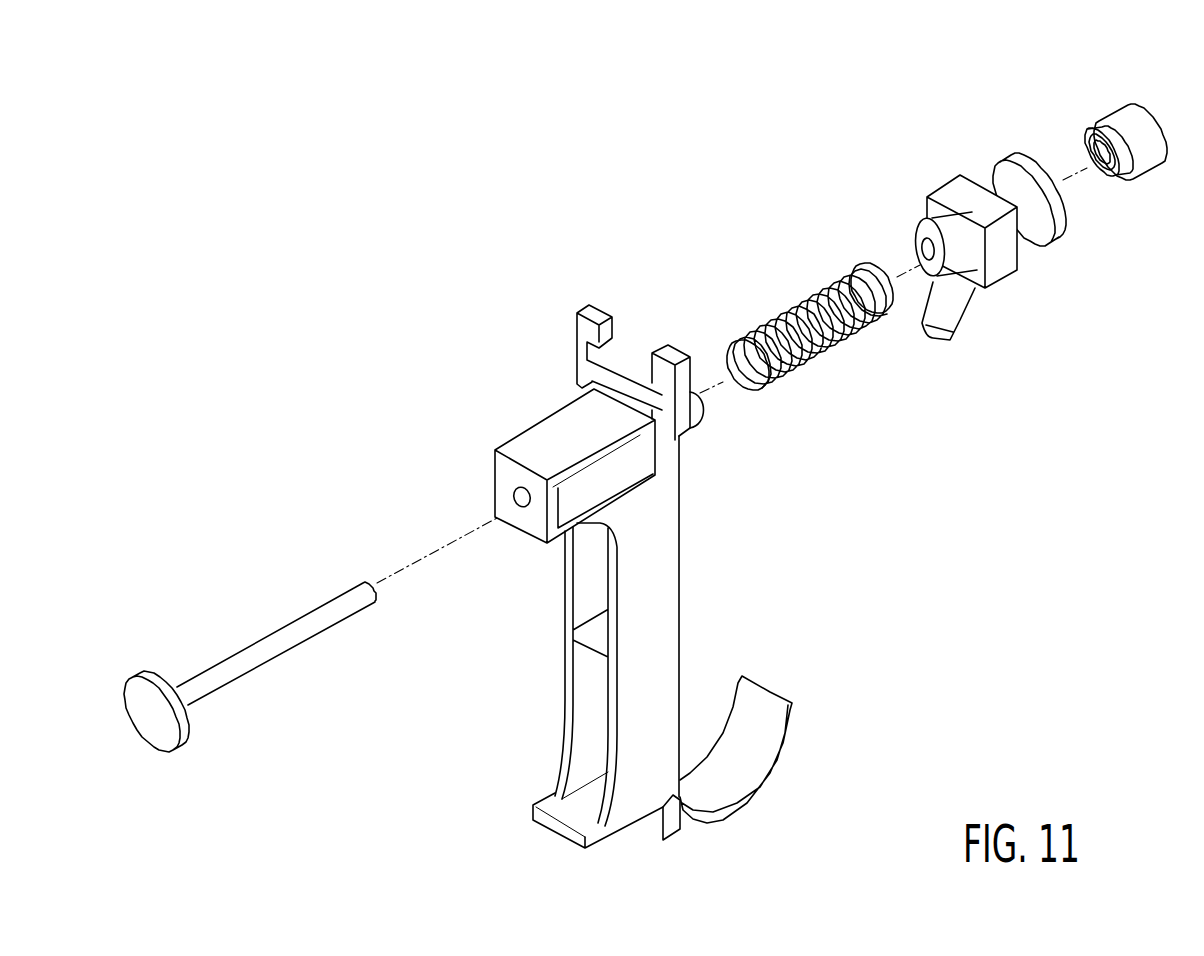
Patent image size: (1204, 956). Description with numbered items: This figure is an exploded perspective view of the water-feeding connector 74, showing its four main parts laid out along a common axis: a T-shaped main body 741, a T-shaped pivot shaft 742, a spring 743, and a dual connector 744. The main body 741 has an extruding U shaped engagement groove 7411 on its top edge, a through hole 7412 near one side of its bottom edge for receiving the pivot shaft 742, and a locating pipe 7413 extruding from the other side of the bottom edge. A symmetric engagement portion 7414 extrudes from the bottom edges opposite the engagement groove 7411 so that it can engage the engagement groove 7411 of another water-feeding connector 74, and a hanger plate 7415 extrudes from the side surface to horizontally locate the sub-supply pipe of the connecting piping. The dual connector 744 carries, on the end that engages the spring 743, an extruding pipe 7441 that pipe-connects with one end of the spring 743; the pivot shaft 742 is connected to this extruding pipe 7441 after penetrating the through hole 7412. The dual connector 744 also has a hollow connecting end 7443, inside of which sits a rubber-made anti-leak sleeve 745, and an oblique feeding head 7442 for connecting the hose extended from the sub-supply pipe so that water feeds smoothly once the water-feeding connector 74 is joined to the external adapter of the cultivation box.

The water-feeding connector 74 is at (331, 229).
The T-shaped main body 741 is at (568, 627).
The U shaped engagement groove 7411 is at (592, 358).
The through hole 7412 is at (515, 495).
The locating pipe 7413 is at (697, 415).
The symmetric engagement portion 7414 is at (678, 828).
The hanger plate 7415 is at (770, 697).
The T-shaped pivot shaft 742 is at (253, 635).
The spring 743 is at (800, 290).
The dual connector 744 is at (960, 160).
The extruding pipe 7441 is at (928, 233).
The oblique feeding head 7442 is at (968, 318).
The hollow connecting end 7443 is at (1015, 167).
The anti-leak sleeve 745 is at (1128, 110).